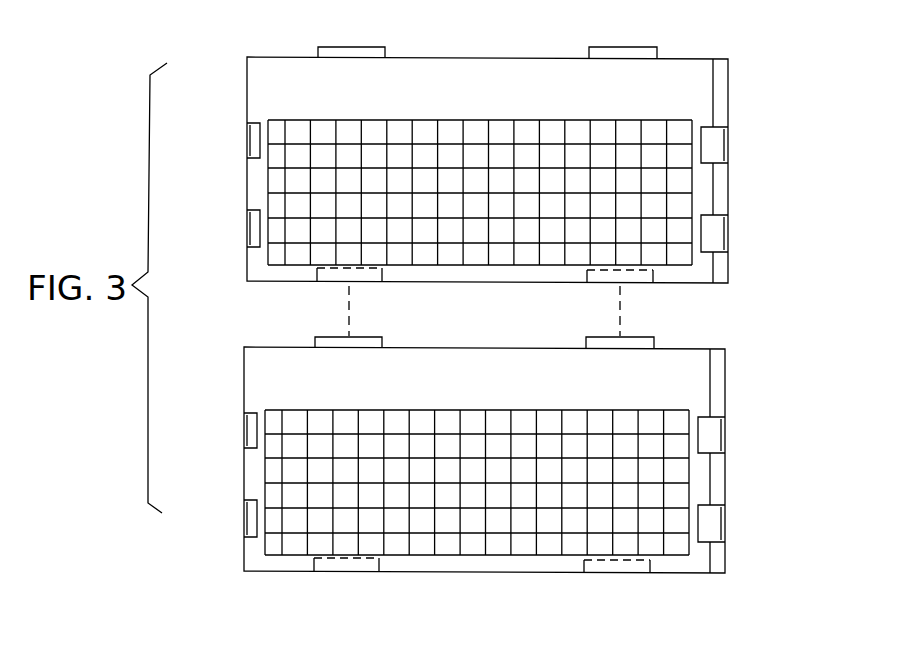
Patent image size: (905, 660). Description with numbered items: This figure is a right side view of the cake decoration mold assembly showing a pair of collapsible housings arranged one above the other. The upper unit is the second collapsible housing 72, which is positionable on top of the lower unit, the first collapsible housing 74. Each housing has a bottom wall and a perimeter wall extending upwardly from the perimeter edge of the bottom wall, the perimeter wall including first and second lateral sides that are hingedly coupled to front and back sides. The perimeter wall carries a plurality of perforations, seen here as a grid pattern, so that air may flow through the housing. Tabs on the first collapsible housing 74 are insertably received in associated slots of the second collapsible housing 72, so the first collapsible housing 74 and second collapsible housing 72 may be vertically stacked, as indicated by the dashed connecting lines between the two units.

The second collapsible housing 72 is at (489, 146).
The first collapsible housing 74 is at (488, 457).